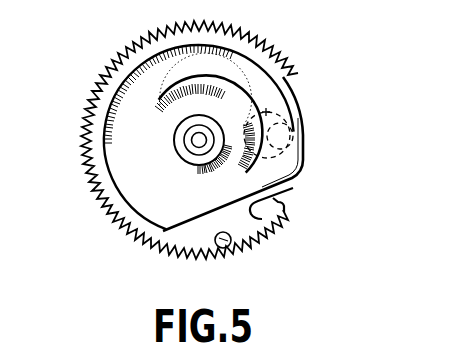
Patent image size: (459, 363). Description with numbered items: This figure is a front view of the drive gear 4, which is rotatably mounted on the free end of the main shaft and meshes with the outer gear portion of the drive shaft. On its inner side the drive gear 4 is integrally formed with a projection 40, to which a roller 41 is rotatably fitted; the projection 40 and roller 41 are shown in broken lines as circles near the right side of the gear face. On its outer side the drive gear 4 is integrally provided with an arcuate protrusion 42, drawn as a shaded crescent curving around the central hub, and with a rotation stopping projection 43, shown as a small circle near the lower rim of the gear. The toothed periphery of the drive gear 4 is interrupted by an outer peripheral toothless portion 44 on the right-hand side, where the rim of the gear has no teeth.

The drive gear 4 is at (90, 176).
The projection 40 is at (281, 134).
The roller 41 is at (266, 112).
The arcuate protrusion 42 is at (203, 84).
The rotation stopping projection 43 is at (216, 248).
The outer peripheral toothless portion 44 is at (304, 154).